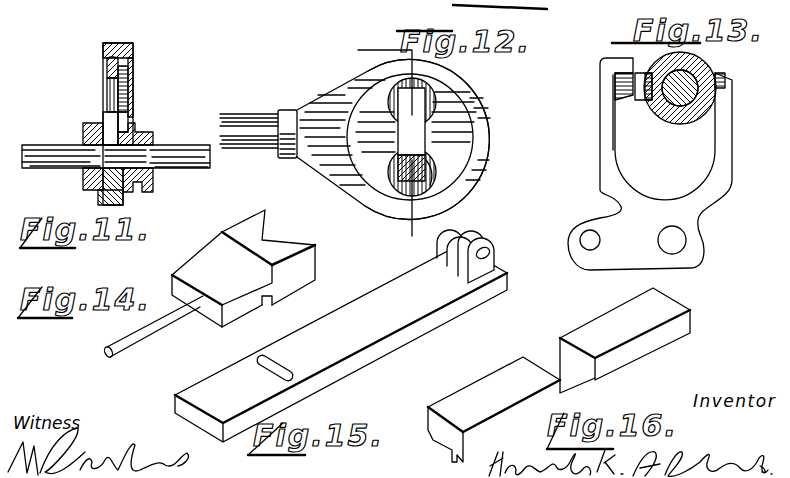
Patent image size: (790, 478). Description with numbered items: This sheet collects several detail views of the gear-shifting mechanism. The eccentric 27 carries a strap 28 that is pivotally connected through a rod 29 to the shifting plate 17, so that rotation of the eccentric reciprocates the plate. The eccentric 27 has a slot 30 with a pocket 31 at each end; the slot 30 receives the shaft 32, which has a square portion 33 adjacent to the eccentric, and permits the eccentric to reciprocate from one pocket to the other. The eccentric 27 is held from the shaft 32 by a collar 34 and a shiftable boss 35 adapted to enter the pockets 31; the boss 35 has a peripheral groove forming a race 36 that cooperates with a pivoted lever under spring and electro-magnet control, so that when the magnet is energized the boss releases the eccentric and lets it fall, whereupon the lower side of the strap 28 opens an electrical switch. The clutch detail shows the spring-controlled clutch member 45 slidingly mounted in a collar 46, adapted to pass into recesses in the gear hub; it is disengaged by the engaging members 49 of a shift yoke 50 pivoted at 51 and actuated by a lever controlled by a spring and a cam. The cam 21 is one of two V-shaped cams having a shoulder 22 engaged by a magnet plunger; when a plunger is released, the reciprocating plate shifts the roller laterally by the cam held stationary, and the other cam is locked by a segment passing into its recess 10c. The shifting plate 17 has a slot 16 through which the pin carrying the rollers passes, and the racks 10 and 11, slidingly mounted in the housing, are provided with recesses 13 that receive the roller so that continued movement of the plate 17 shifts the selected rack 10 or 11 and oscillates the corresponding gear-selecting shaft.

In FIG. 16, the rack 10 is at (498, 375).
In FIG. 14, the recess in cam 10c is at (268, 300).
In FIG. 12, the rack 11 is at (371, 142).
In FIG. 16, the rack 11 is at (463, 397).
In FIG. 16, the recess 13 is at (540, 358).
In FIG. 15, the slot 16 is at (280, 367).
In FIG. 15, the shifting plate 17 is at (341, 336).
In FIG. 14, the V-shaped cam 21 is at (262, 228).
In FIG. 14, the shoulder 22 is at (221, 240).
In FIG. 11, the eccentric 27 is at (103, 68).
In FIG. 12, the eccentric 27 is at (430, 150).
In FIG. 11, the strap 28 is at (128, 34).
In FIG. 12, the strap 28 is at (488, 170).
In FIG. 12, the rod 29 is at (268, 100).
In FIG. 11, the slot 30 is at (110, 90).
In FIG. 12, the slot 30 is at (418, 136).
In FIG. 11, the pocket 31 is at (130, 88).
In FIG. 12, the pocket 31 is at (434, 174).
In FIG. 11, the shaft 32 is at (38, 152).
In FIG. 12, the shaft 32 is at (392, 186).
In FIG. 13, the shaft 32 is at (662, 107).
In FIG. 11, the square portion 33 is at (150, 162).
In FIG. 12, the square portion 33 is at (392, 188).
In FIG. 11, the collar 34 is at (90, 183).
In FIG. 11, the shiftable boss 35 is at (118, 130).
In FIG. 11, the race 36 is at (140, 125).
In FIG. 13, the clutch member 45 is at (637, 100).
In FIG. 13, the collar 46 is at (705, 70).
In FIG. 13, the engaging member 49 is at (608, 65).
In FIG. 13, the shift yoke 50 is at (725, 145).
In FIG. 13, the pivot 51 is at (680, 240).